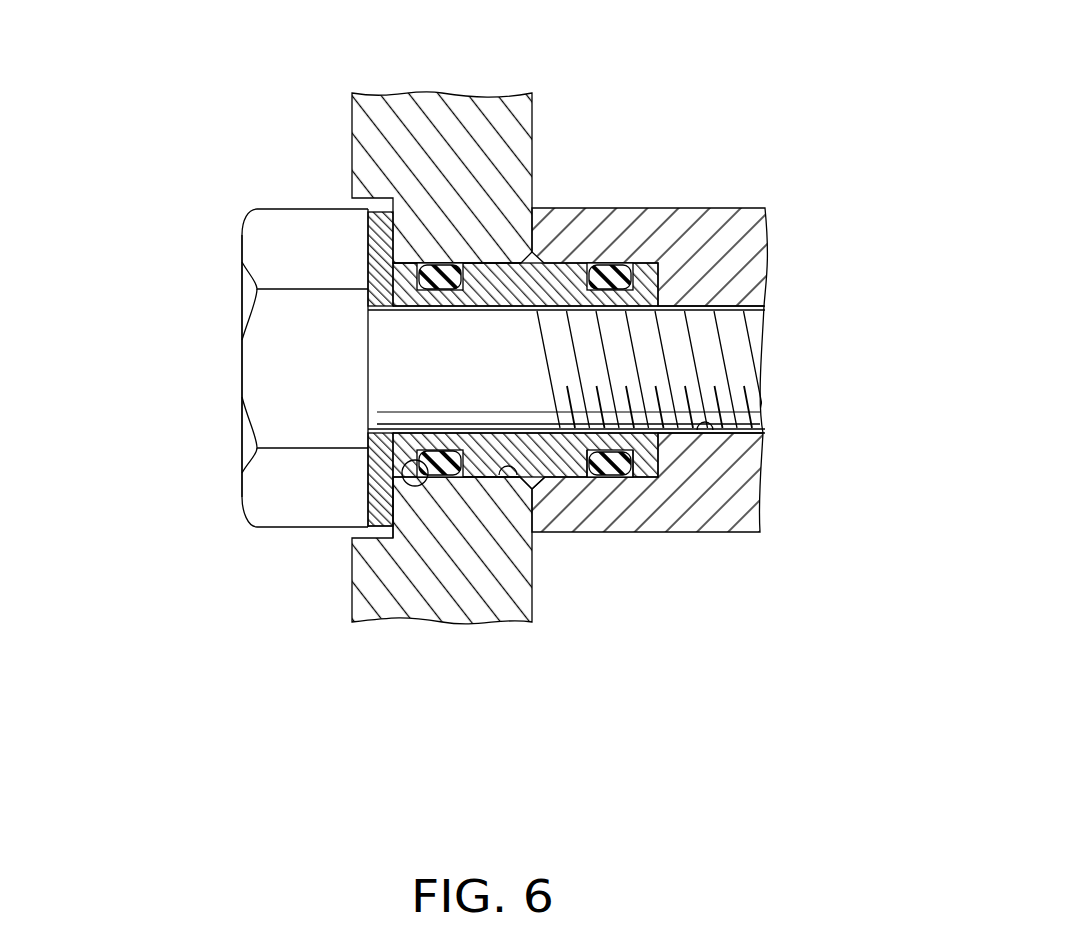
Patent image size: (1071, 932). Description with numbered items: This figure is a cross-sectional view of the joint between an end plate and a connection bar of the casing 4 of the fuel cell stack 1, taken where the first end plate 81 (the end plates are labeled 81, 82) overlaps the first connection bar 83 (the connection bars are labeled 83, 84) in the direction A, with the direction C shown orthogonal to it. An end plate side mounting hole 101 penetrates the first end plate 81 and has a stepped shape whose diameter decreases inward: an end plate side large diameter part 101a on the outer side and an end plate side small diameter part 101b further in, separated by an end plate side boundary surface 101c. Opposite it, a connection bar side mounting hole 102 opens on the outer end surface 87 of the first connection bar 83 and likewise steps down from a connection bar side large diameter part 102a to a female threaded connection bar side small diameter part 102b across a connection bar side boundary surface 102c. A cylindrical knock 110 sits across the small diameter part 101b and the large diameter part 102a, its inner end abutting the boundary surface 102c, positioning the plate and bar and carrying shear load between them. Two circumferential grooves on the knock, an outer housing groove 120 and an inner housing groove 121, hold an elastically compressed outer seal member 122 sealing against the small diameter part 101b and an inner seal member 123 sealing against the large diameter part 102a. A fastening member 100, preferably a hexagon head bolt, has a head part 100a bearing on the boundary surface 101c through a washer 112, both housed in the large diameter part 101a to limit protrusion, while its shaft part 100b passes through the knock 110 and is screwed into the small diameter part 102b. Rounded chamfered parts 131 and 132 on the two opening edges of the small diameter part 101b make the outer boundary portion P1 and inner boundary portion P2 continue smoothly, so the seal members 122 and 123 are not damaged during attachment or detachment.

The fuel cell stack 1 is at (155, 109).
The casing 4 is at (215, 141).
The first end plate 81 is at (372, 342).
The second end plate 82 is at (353, 118).
The first connection bar 83 is at (716, 370).
The second connection bar 84 is at (749, 476).
The outer end surface 87 is at (536, 481).
The fastening member 100 is at (245, 220).
The head part 100a is at (243, 303).
The shaft part 100b is at (517, 328).
The end plate side mounting hole 101 is at (140, 375).
The end plate side large diameter part 101a is at (378, 550).
The end plate side small diameter part 101b is at (477, 473).
The end plate side boundary surface 101c is at (372, 519).
The connection bar side mounting hole 102 is at (750, 657).
The connection bar side large diameter part 102a is at (584, 476).
The connection bar side small diameter part 102b is at (705, 430).
The connection bar side boundary surface 102c is at (646, 478).
The cylindrical knock 110 is at (512, 263).
The washer 112 is at (380, 247).
The outer housing groove 120 is at (449, 265).
The inner housing groove 121 is at (626, 266).
The outer seal member 122 is at (419, 263).
The inner seal member 123 is at (601, 266).
The chamfered part 131 is at (430, 478).
The chamfered part 132 is at (505, 478).
The outer boundary portion P1 is at (403, 479).
The inner boundary portion P2 is at (535, 484).
The direction A is at (847, 731).
The direction C is at (862, 635).